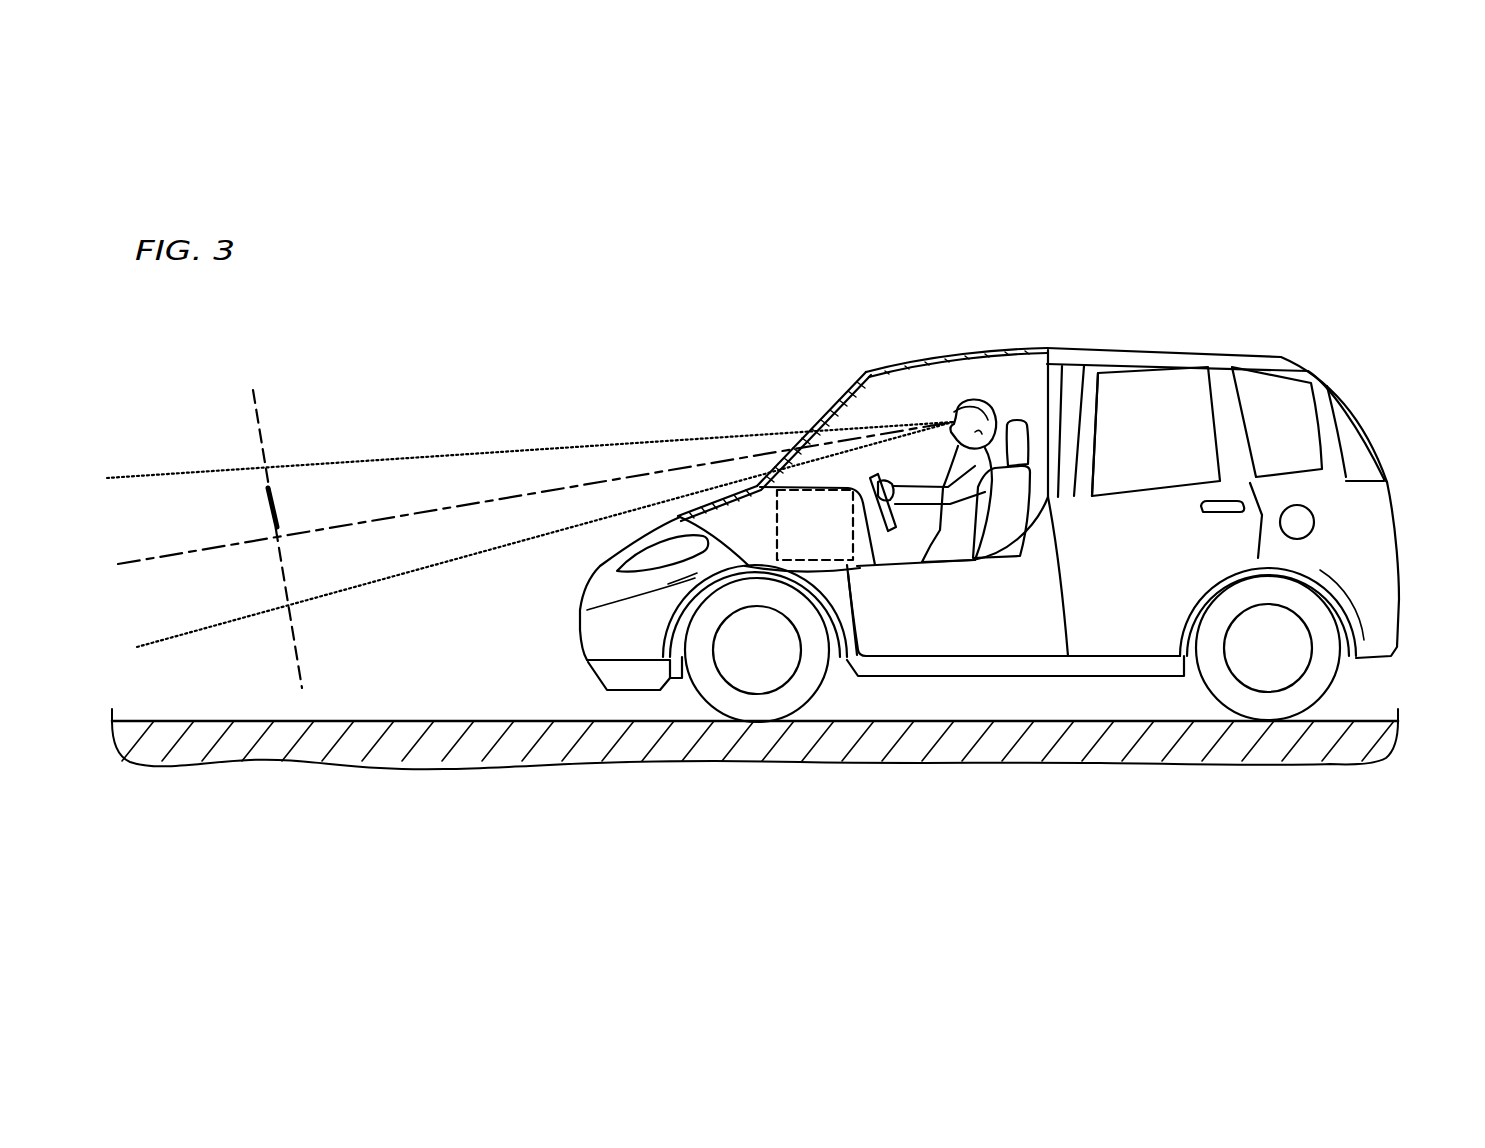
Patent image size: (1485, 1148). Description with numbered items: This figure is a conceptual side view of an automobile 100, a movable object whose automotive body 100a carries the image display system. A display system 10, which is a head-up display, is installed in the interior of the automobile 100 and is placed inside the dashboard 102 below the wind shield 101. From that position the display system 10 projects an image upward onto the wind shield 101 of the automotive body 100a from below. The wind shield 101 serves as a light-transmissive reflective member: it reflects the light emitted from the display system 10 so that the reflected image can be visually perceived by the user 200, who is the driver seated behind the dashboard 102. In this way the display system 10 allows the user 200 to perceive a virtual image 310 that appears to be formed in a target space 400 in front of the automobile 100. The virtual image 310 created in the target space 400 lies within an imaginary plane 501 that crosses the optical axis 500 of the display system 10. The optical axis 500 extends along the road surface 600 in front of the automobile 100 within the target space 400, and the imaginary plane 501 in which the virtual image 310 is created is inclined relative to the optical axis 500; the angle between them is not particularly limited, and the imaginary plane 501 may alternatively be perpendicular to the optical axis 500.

The display system 10 is at (853, 538).
The automobile 100 is at (1022, 510).
The automotive body 100a is at (1377, 527).
The wind shield 101 is at (827, 417).
The dashboard 102 is at (860, 568).
The user 200 is at (985, 414).
The virtual image 310 is at (272, 490).
The target space 400 is at (558, 446).
The optical axis 500 is at (151, 567).
The imaginary plane 501 is at (252, 394).
The road surface 600 is at (450, 721).